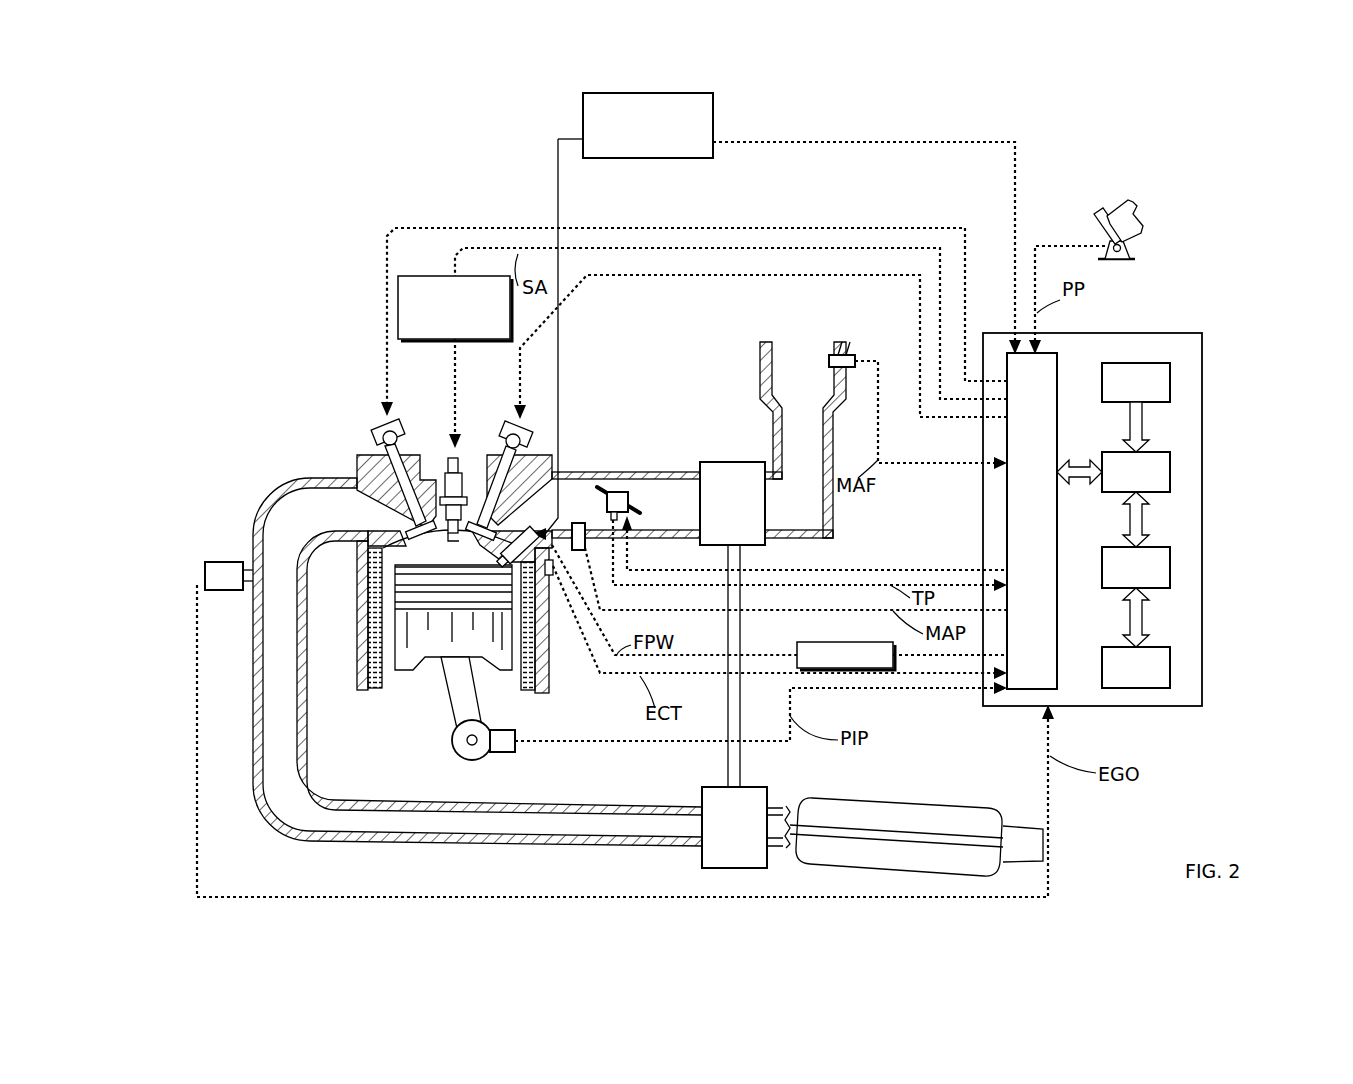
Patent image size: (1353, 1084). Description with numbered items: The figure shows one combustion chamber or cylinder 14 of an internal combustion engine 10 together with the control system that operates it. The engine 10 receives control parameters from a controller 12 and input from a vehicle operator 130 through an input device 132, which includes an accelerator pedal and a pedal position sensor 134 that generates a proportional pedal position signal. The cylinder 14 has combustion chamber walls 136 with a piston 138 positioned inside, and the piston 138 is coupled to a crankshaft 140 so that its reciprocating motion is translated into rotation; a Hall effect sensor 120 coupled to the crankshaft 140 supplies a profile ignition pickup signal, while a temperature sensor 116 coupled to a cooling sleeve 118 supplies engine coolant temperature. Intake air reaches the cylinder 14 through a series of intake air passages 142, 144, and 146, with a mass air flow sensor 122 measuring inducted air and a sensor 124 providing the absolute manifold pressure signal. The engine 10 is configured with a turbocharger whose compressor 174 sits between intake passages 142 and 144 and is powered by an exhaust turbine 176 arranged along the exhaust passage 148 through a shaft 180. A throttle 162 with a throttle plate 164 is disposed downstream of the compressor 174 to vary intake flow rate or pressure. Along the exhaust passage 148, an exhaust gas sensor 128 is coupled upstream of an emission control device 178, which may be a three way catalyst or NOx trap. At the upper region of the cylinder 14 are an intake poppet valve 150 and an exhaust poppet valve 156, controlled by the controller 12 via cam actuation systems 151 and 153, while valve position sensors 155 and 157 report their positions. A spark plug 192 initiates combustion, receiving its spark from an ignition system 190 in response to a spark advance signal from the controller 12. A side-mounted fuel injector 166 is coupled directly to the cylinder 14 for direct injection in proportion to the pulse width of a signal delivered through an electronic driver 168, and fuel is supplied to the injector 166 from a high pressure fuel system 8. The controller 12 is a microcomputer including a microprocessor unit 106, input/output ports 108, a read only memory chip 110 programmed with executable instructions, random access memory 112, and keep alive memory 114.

The high pressure fuel system 8 is at (713, 104).
The internal combustion engine 10 is at (190, 170).
The controller 12 is at (1202, 334).
The cylinder 14 is at (357, 566).
The microprocessor unit 106 is at (1174, 472).
The input/output ports 108 is at (1058, 362).
The read only memory chip 110 is at (1174, 382).
The random access memory 112 is at (1174, 571).
The keep alive memory 114 is at (1174, 665).
The temperature sensor 116 is at (545, 648).
The cooling sleeve 118 is at (540, 690).
The Hall effect sensor 120 is at (505, 752).
The mass air flow sensor 122 is at (846, 354).
The manifold pressure sensor 124 is at (580, 552).
The exhaust gas sensor 128 is at (205, 566).
The vehicle operator 130 is at (1140, 210).
The input device 132 is at (1100, 226).
The pedal position sensor 134 is at (1132, 252).
The combustion chamber walls 136 is at (386, 690).
The piston 138 is at (406, 660).
The crankshaft 140 is at (462, 756).
The intake air passage 142 is at (803, 440).
The intake air passage 144 is at (626, 505).
The intake air passage 146 is at (535, 508).
The exhaust passage 148 is at (477, 662).
The intake poppet valve 150 is at (492, 518).
The cam actuation system 151 is at (502, 436).
The cam actuation system 153 is at (396, 426).
The valve position sensor 155 is at (538, 444).
The exhaust poppet valve 156 is at (406, 526).
The valve position sensor 157 is at (376, 428).
The throttle 162 is at (622, 492).
The throttle plate 164 is at (598, 490).
The fuel injector 166 is at (520, 539).
The electronic driver 168 is at (797, 643).
The compressor 174 is at (728, 462).
The exhaust turbine 176 is at (702, 858).
The emission control device 178 is at (966, 800).
The shaft 180 is at (741, 756).
The ignition system 190 is at (412, 276).
The spark plug 192 is at (451, 488).